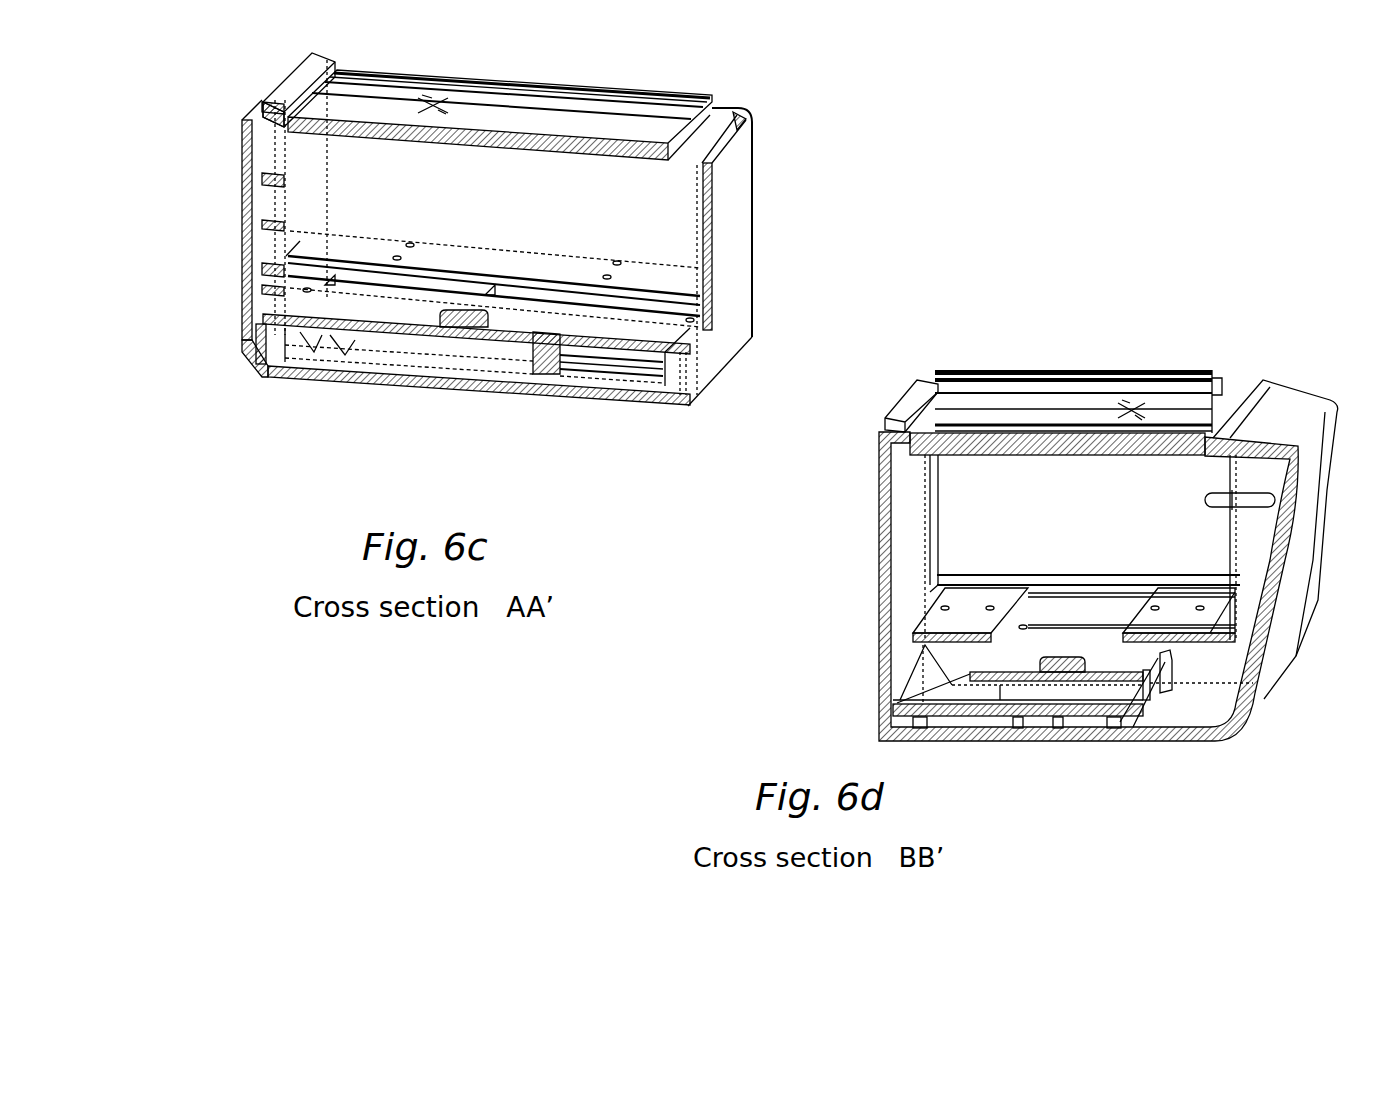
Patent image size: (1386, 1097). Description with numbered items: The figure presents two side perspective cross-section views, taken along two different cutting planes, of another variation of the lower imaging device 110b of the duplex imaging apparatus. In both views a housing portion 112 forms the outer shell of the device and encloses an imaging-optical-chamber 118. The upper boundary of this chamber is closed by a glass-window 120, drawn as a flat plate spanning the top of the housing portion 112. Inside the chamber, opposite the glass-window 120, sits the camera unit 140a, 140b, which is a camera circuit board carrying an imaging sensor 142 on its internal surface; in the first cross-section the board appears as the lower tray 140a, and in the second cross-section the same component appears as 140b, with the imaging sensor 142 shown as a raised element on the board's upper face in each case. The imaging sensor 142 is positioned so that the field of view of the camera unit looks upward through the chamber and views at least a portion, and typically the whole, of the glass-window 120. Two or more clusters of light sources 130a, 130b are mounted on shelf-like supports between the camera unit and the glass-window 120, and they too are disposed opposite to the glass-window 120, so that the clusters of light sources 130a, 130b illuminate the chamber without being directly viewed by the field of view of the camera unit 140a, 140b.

In FIG. 6C, the lower imaging device 110b is at (226, 384).
In FIG. 6D, the lower imaging device 110b is at (1066, 328).
In FIG. 6C, the housing portion 112 is at (745, 178).
In FIG. 6D, the housing portion 112 is at (1287, 392).
In FIG. 6C, the imaging-optical-chamber 118 is at (690, 220).
In FIG. 6D, the imaging-optical-chamber 118 is at (965, 520).
In FIG. 6C, the glass-window 120 is at (575, 118).
In FIG. 6D, the glass-window 120 is at (950, 462).
In FIG. 6C, the cluster of light sources 130a is at (320, 243).
In FIG. 6D, the cluster of light sources 130a is at (915, 623).
In FIG. 6D, the cluster of light sources 130b is at (1212, 596).
In FIG. 6C, the camera unit 140a is at (345, 375).
In FIG. 6D, the camera unit 140b is at (1140, 660).
In FIG. 6C, the imaging sensor 142 is at (455, 328).
In FIG. 6D, the imaging sensor 142 is at (1068, 681).